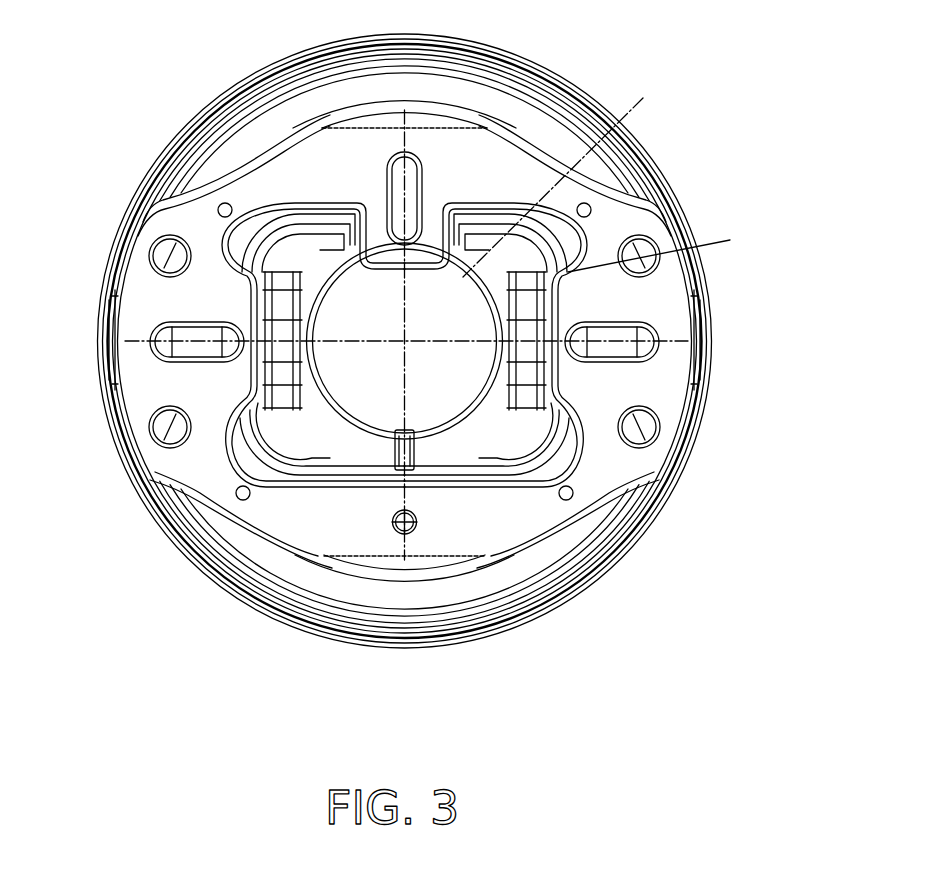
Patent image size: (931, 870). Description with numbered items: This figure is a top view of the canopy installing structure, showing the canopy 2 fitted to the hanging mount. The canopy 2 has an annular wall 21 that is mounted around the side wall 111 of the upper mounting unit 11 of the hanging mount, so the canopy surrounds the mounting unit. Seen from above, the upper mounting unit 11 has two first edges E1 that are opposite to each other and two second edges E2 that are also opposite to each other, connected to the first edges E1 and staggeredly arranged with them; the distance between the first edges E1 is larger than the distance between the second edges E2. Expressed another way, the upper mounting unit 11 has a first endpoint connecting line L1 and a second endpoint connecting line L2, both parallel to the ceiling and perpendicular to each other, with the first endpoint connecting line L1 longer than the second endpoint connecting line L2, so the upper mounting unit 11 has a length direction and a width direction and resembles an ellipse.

The canopy 2 is at (686, 461).
The annular wall 21 is at (233, 590).
The upper mounting unit 11 is at (558, 498).
The side wall 111 is at (363, 560).
The first edges E1 is at (708, 330).
The second edges E2 is at (438, 128).
The first endpoint connecting line L1 is at (665, 250).
The second endpoint connecting line L2 is at (570, 181).